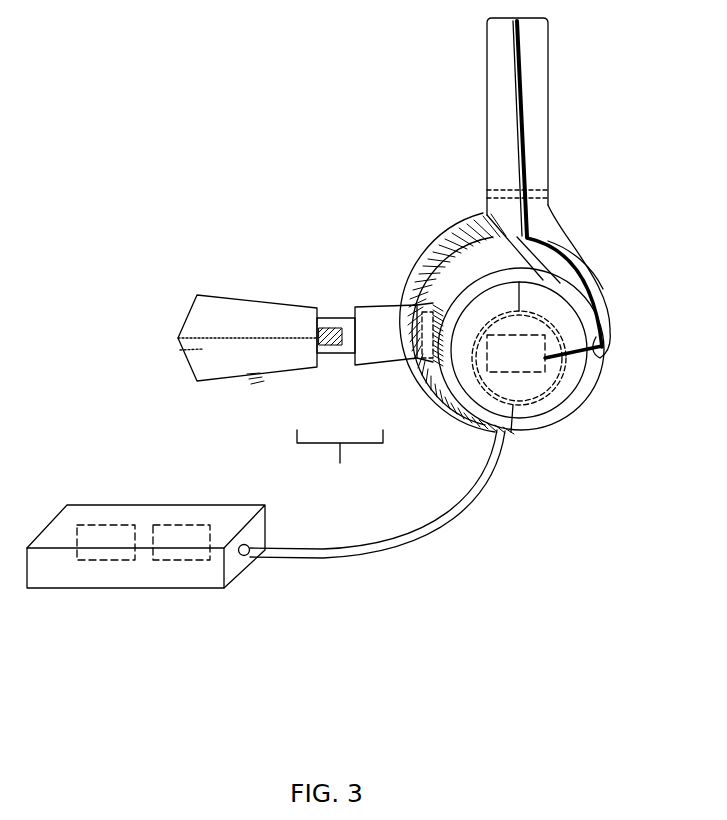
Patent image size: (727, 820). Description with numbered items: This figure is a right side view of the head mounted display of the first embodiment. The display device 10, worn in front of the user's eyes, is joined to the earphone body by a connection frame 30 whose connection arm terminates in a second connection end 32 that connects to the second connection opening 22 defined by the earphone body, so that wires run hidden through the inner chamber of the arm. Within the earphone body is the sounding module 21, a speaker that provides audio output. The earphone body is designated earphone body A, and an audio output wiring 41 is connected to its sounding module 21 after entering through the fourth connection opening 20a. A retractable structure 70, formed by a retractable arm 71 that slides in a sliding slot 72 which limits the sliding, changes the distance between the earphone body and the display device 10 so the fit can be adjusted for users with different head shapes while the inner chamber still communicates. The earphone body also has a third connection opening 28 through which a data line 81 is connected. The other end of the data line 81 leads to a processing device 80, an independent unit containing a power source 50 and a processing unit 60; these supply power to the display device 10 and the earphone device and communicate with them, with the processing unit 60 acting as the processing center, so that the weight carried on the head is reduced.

The display device 10 is at (235, 292).
The connection frame 30 is at (200, 348).
The second connection end 32 is at (417, 315).
The fourth connection opening 20a is at (598, 357).
The sounding module 21 is at (548, 365).
The second connection opening 22 is at (410, 367).
The third connection opening 28 is at (505, 440).
The audio output wiring 41 is at (528, 162).
The earphone body A is at (600, 315).
The retractable structure 70 is at (340, 407).
The retractable arm 71 is at (333, 352).
The sliding slot 72 is at (410, 357).
The processing device 80 is at (133, 518).
The power source 50 is at (107, 560).
The processing unit 60 is at (180, 560).
The data line 81 is at (462, 500).